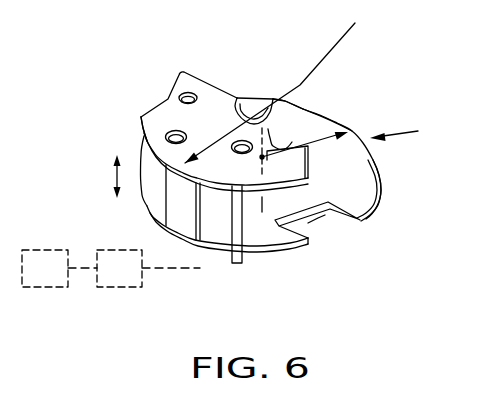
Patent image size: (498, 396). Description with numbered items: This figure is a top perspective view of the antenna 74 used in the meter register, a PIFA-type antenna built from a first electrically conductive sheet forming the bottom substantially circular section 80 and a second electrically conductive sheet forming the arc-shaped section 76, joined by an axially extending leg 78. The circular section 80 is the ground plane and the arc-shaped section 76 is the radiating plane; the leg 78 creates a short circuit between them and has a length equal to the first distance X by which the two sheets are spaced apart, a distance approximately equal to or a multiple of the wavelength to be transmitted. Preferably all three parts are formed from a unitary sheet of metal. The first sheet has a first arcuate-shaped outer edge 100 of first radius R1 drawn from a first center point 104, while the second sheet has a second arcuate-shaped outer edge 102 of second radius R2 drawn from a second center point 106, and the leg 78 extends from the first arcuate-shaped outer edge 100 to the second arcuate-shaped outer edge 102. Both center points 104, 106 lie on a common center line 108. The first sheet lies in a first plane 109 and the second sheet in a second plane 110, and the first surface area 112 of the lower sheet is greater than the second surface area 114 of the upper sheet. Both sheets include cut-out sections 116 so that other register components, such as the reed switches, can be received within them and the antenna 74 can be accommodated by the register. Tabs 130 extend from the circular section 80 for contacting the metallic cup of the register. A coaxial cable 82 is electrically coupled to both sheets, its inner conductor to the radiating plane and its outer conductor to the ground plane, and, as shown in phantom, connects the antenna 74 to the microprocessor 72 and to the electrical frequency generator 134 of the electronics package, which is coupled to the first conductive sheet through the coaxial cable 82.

The microprocessor 72 is at (115, 287).
The antenna 74 is at (412, 133).
The arc-shaped section 76 is at (247, 97).
The leg 78 is at (204, 201).
The circular section 80 is at (379, 195).
The coaxial cable 82 is at (241, 203).
The first arcuate-shaped outer edge 100 is at (382, 172).
The second arcuate-shaped outer edge 102 is at (141, 117).
The first center point 104 is at (276, 100).
The second center point 106 is at (265, 153).
The center line 108 is at (262, 98).
The first plane 109 is at (332, 210).
The second plane 110 is at (293, 87).
The first surface area 112 is at (343, 146).
The second surface area 114 is at (209, 86).
The cut-out sections 116 is at (180, 96).
The tabs 130 is at (142, 203).
The electrical frequency generator 134 is at (42, 287).
The first radius R1 is at (215, 123).
The second radius R2 is at (312, 163).
The first distance X is at (112, 178).